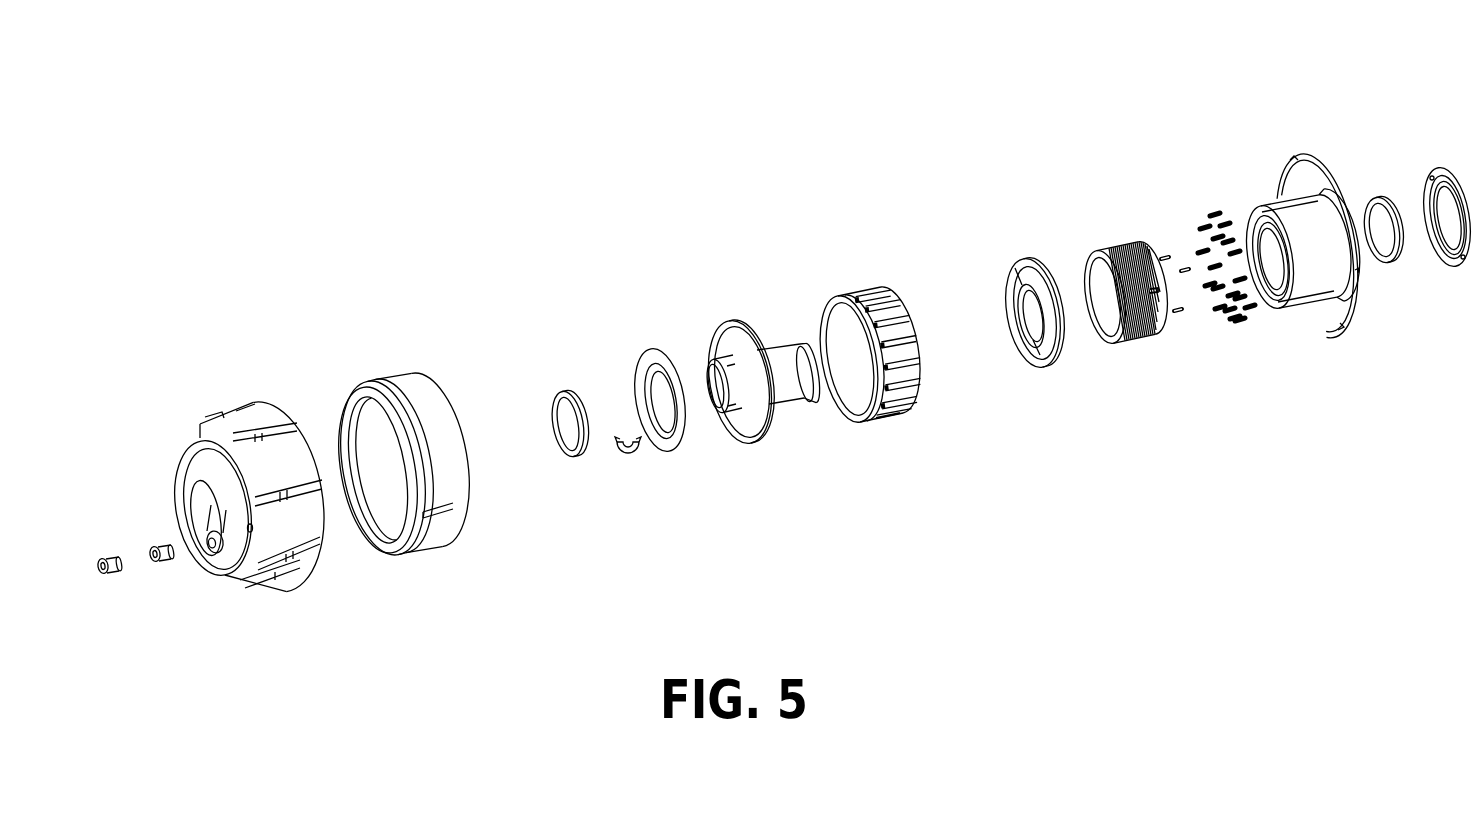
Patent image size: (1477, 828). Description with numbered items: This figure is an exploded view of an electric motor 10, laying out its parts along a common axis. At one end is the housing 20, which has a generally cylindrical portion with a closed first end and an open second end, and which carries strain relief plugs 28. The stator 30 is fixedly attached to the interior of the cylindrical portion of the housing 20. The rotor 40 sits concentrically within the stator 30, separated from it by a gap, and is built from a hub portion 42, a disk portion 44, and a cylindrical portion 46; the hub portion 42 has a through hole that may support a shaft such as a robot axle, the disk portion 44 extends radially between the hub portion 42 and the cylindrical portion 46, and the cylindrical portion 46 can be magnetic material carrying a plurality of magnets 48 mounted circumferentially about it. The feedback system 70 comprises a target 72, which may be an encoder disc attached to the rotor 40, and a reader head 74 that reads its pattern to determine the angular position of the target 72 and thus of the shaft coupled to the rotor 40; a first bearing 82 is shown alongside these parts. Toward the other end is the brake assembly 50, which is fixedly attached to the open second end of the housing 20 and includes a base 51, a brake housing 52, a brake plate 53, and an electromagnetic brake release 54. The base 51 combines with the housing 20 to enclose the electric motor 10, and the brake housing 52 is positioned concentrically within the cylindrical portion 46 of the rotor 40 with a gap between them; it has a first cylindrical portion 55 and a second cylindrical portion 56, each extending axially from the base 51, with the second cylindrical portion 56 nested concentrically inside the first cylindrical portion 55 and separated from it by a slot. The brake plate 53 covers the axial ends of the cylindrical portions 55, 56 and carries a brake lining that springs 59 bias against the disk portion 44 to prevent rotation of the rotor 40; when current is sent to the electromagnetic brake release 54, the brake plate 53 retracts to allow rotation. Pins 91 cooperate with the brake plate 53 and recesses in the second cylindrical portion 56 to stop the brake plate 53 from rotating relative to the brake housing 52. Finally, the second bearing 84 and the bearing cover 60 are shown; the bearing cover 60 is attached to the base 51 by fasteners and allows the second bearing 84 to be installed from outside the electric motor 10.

The electric motor 10 is at (940, 98).
The housing 20 is at (210, 378).
The strain relief plugs 28 is at (110, 573).
The stator 30 is at (370, 364).
The rotor 40 is at (715, 286).
The hub portion 42 is at (792, 412).
The disk portion 44 is at (760, 446).
The cylindrical portion 46 is at (860, 430).
The magnets 48 is at (901, 430).
The brake assembly 50 is at (1187, 172).
The base 51 is at (1342, 336).
The brake housing 52 is at (1268, 178).
The brake plate 53 is at (1045, 366).
The electromagnetic brake release 54 is at (1120, 343).
The first cylindrical portion 55 is at (1302, 306).
The second cylindrical portion 56 is at (1283, 308).
The springs 59 is at (1232, 346).
The bearing cover 60 is at (1440, 162).
The feedback system 70 is at (603, 347).
The target 72 is at (676, 456).
The reader head 74 is at (634, 464).
The first bearing 82 is at (574, 458).
The second bearing 84 is at (1386, 268).
The pins 91 is at (1180, 342).